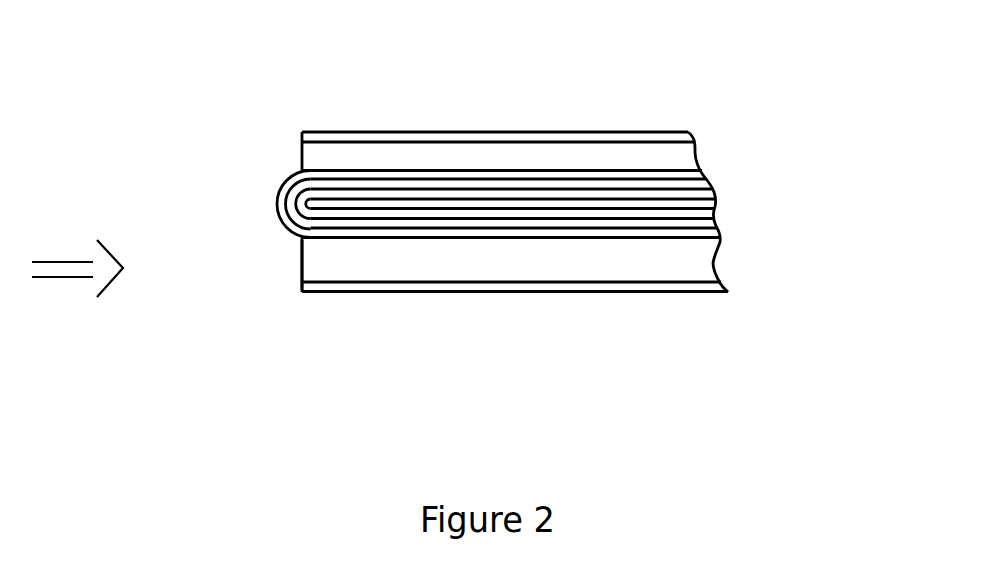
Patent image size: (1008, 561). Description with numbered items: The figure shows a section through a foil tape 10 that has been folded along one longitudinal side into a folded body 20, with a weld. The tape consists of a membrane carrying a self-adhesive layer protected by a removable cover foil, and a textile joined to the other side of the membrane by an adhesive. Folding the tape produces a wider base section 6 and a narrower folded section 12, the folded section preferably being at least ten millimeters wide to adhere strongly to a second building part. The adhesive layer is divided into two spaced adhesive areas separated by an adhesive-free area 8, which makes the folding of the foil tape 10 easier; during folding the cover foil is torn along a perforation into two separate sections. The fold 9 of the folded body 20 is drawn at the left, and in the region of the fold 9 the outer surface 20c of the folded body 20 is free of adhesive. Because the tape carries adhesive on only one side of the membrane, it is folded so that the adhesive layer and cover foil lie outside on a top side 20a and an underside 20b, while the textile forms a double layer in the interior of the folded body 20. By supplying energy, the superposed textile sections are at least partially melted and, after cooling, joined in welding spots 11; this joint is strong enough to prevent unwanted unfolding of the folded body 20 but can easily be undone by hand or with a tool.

The folded body 20 is at (584, 97).
The top side 20a is at (436, 123).
The underside 20b is at (420, 293).
The outer surface 20c is at (292, 172).
The folded section 12 is at (539, 93).
The foil tape 10 is at (755, 127).
The base section 6 is at (655, 318).
The adhesive-free area 8 is at (280, 275).
The fold 9 is at (252, 200).
The welding spots 11 is at (503, 209).